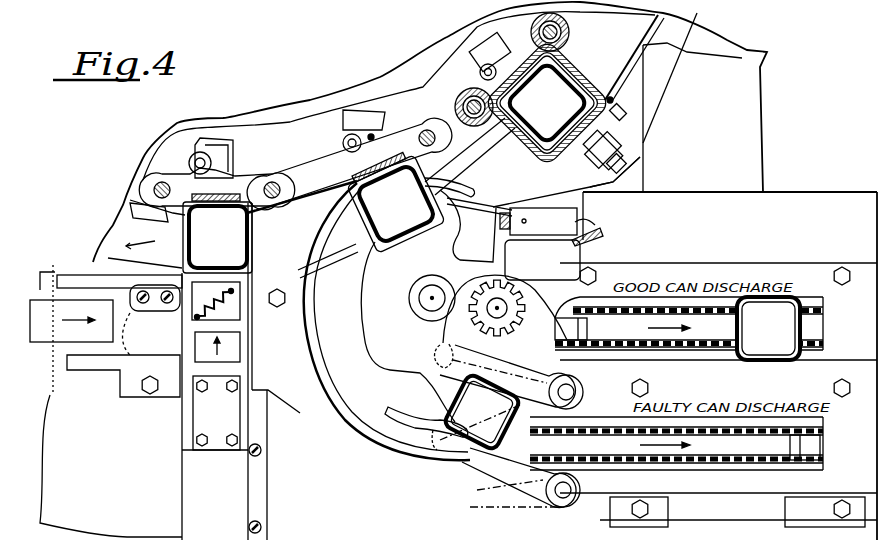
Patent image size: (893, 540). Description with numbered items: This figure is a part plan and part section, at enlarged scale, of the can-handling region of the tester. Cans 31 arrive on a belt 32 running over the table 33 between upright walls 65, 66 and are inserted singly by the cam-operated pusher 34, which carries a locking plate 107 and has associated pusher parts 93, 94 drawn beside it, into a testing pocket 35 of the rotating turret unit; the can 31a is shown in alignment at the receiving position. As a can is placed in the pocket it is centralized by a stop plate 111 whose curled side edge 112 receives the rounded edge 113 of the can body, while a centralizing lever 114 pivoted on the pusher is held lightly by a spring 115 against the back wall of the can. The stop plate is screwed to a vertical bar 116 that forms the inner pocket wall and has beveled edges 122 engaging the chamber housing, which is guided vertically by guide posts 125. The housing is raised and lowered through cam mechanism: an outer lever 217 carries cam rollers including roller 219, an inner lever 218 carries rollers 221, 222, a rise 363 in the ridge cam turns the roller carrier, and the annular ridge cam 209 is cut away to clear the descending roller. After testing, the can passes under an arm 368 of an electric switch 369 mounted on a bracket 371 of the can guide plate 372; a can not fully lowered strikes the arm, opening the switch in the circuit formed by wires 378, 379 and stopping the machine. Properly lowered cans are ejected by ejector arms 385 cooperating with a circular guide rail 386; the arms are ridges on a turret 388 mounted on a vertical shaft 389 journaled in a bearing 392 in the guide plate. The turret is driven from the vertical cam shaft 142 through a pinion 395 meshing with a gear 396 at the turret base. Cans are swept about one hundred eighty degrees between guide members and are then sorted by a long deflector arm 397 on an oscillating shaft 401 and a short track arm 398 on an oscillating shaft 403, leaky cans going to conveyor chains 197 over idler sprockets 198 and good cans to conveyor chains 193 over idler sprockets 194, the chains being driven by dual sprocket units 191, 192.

The can 31 is at (111, 401).
The can 31a is at (250, 240).
The belt 32 is at (71, 321).
The table 33 is at (53, 272).
The cam-operated pusher 34 is at (193, 425).
The testing pocket 35 is at (170, 233).
The upright wall 65 is at (80, 275).
The upright wall 66 is at (110, 360).
The channel 93 is at (192, 486).
The side strip 94 is at (245, 530).
The locking plate 107 is at (253, 315).
The stop plate 111 is at (205, 196).
The curled side edge 112 is at (262, 214).
The rounded edge 113 is at (235, 214).
The centralizing lever 114 is at (198, 284).
The spring 115 is at (232, 292).
The vertical bar 116 is at (233, 196).
The beveled edge 122 is at (140, 203).
The vertical guide post 125 is at (158, 188).
The vertical cam shaft 142 is at (500, 306).
The dual sprocket unit 191 is at (822, 330).
The dual sprocket unit 192 is at (820, 450).
The conveyor chain 193 is at (618, 306).
The idler sprocket 194 is at (558, 330).
The conveyor chain 197 is at (620, 422).
The idler sprocket 198 is at (487, 460).
The annular ridge cam 209 is at (630, 66).
The outer lever 217 is at (610, 139).
The inner lever 218 is at (623, 111).
The cam roller 219 is at (623, 162).
The cam roller 221 is at (613, 100).
The cam roller 222 is at (535, 180).
The rise 363 is at (617, 185).
The arm 368 is at (463, 200).
The electric switch 369 is at (538, 221).
The bracket 371 is at (582, 252).
The can guide plate 372 is at (700, 275).
The wire 378 is at (595, 236).
The wire 379 is at (582, 221).
The ejector arm 385 is at (463, 188).
The circular guide rail 386 is at (340, 333).
The turret 388 is at (435, 315).
The vertical shaft 389 is at (430, 304).
The bearing 392 is at (430, 299).
The pinion 395 is at (520, 300).
The gear 396 is at (466, 295).
The deflector arm 397 is at (520, 378).
The track arm 398 is at (476, 493).
The oscillating shaft 401 is at (585, 387).
The oscillating shaft 403 is at (564, 498).